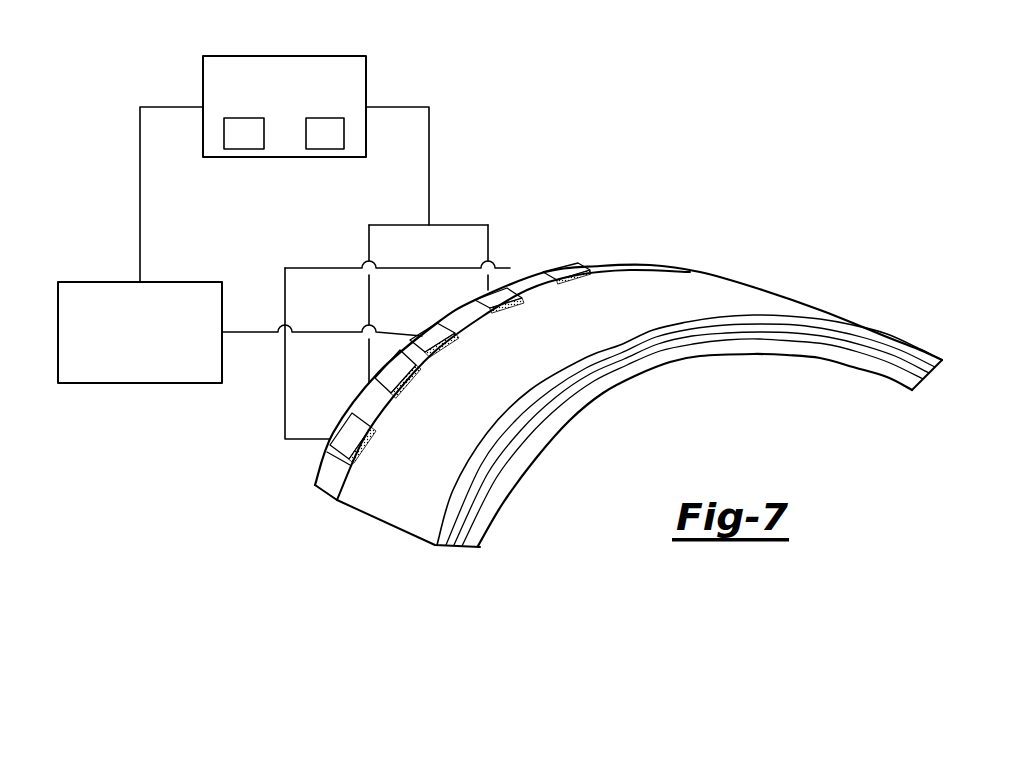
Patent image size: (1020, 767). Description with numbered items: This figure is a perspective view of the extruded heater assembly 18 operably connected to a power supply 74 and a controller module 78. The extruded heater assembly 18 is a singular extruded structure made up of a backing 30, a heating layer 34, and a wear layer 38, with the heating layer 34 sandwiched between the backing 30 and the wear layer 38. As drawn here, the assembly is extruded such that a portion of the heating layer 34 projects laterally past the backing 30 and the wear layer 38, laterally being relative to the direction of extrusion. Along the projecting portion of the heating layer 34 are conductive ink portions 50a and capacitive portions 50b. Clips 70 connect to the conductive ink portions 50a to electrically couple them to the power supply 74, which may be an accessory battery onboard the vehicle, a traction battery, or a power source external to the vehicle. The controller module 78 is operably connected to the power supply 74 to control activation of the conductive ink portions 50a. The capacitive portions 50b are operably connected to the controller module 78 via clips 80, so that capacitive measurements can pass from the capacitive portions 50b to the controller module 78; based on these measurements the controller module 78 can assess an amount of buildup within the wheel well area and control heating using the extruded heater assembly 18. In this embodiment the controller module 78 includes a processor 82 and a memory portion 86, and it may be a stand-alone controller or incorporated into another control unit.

The extruded heater assembly 18 is at (584, 388).
The backing 30 is at (628, 406).
The heating layer 34 is at (322, 477).
The wear layer 38 is at (482, 523).
The conductive ink portions 50a is at (360, 460).
The capacitive portions 50b is at (510, 300).
The clips 70 is at (336, 446).
The power supply 74 is at (163, 282).
The controller module 78 is at (318, 57).
The clips 80 is at (370, 384).
The processor 82 is at (237, 157).
The memory portion 86 is at (328, 157).